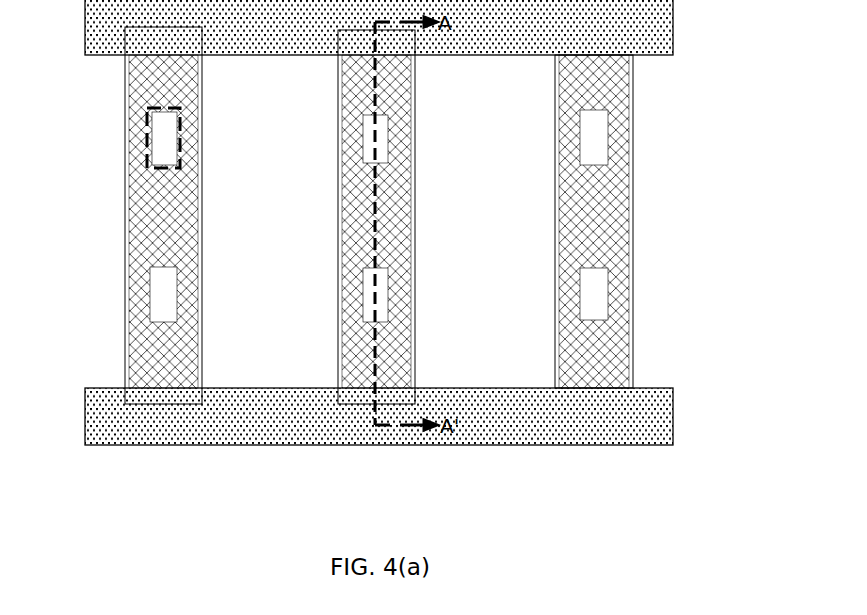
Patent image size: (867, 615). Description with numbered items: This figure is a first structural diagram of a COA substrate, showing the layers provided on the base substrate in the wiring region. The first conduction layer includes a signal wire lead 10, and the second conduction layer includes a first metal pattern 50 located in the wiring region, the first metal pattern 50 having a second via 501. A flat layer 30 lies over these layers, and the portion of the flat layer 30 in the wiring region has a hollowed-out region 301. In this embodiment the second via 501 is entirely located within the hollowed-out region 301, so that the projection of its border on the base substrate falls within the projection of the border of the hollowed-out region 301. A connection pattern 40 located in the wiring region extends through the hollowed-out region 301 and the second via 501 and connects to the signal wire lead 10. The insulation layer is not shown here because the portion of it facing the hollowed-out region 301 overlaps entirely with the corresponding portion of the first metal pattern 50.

The signal wire lead 10 is at (367, 413).
The flat layer 30 is at (218, 423).
The hollowed-out region 301 is at (643, 55).
The connection pattern 40 is at (340, 330).
The first metal pattern 50 is at (338, 386).
The second via 501 is at (157, 138).